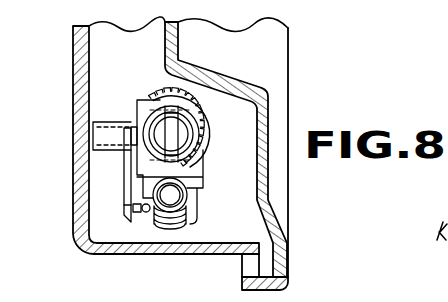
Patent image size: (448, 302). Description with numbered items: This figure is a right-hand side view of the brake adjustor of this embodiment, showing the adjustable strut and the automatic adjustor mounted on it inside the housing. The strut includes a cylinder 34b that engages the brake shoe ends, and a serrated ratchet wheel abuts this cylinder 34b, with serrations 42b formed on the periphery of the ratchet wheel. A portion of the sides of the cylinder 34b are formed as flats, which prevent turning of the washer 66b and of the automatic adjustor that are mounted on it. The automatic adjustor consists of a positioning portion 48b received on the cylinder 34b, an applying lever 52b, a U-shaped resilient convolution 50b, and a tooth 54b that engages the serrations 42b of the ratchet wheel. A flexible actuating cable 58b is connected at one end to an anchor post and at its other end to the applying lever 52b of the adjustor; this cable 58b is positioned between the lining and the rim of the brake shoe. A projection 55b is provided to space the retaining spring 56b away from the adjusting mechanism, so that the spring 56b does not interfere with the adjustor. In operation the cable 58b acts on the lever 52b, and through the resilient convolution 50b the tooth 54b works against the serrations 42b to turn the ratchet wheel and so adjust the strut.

The cylinder 34b is at (162, 108).
The serrations 42b is at (200, 106).
The positioning portion 48b is at (200, 131).
The washer 66b is at (209, 156).
The projection 55b is at (189, 188).
The retaining spring 56b is at (186, 221).
The U-shaped resilient convolution 50b is at (100, 140).
The tooth 54b is at (123, 147).
The flexible actuating cable 58b is at (131, 208).
The applying lever 52b is at (136, 212).